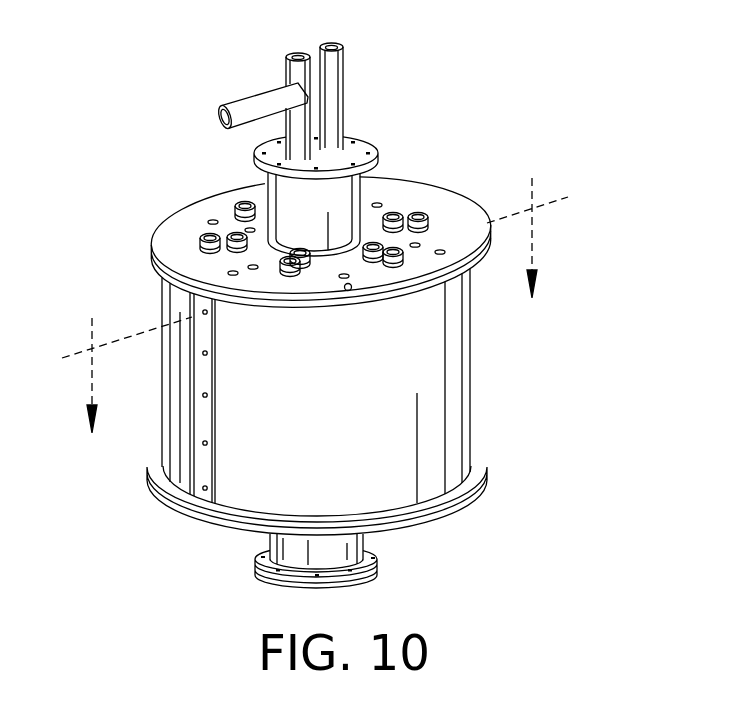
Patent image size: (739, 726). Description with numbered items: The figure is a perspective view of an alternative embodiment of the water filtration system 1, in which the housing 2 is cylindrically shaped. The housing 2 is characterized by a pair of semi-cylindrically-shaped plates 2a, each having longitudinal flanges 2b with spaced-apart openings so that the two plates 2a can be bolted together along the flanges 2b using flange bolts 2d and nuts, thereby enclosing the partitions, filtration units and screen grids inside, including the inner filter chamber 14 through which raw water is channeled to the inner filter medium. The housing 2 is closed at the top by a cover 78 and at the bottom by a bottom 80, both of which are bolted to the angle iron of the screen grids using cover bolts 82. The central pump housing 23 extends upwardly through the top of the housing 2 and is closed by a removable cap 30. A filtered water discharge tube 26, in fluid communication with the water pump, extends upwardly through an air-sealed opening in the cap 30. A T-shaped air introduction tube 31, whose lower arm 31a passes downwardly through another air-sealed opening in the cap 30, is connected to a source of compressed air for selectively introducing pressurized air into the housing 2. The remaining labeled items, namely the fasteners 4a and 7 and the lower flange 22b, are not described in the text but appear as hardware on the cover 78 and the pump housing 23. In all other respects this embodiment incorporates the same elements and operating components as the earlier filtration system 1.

The water filtration system 1 is at (495, 120).
The housing 2 is at (516, 372).
The semi-cylindrically-shaped plate 2a is at (173, 427).
The longitudinal flange 2b is at (192, 375).
The flange bolt 2d is at (207, 353).
The fastener nuts 4a is at (243, 205).
The bolts 7 is at (235, 212).
The inner filter chamber 14 is at (315, 296).
The lower flange 22b is at (293, 590).
The pump housing 23 is at (343, 193).
The filtered water discharge tube 26 is at (333, 95).
The removable cap 30 is at (362, 142).
The air introduction tube 31 is at (257, 102).
The lower arm 31a is at (297, 57).
The cover 78 is at (156, 231).
The bottom 80 is at (436, 538).
The cover bolt 82 is at (443, 250).